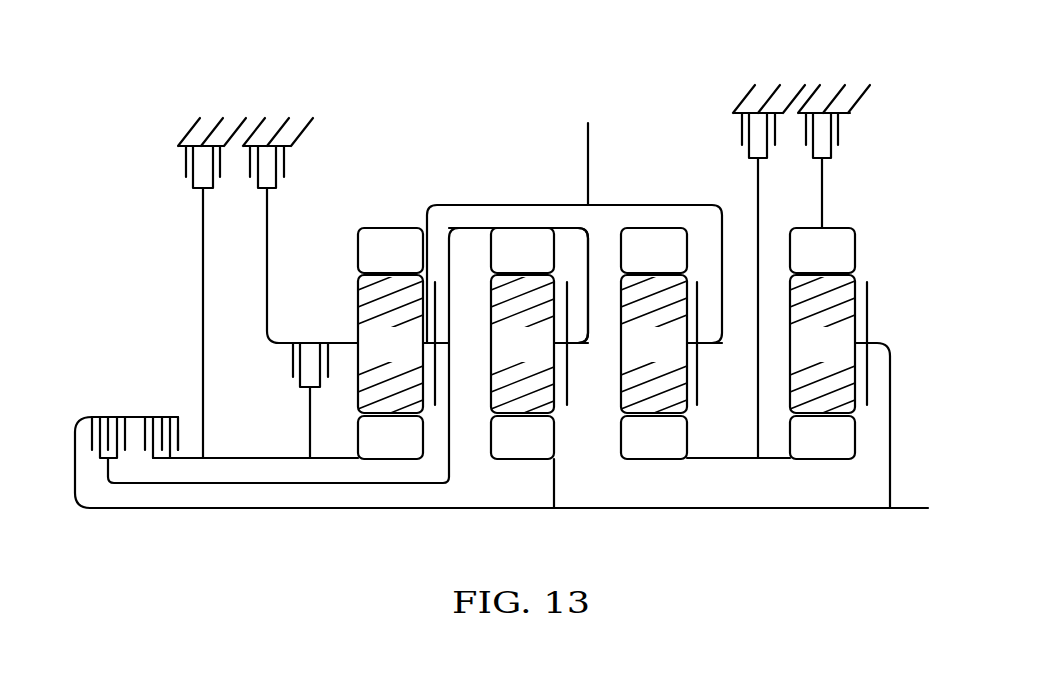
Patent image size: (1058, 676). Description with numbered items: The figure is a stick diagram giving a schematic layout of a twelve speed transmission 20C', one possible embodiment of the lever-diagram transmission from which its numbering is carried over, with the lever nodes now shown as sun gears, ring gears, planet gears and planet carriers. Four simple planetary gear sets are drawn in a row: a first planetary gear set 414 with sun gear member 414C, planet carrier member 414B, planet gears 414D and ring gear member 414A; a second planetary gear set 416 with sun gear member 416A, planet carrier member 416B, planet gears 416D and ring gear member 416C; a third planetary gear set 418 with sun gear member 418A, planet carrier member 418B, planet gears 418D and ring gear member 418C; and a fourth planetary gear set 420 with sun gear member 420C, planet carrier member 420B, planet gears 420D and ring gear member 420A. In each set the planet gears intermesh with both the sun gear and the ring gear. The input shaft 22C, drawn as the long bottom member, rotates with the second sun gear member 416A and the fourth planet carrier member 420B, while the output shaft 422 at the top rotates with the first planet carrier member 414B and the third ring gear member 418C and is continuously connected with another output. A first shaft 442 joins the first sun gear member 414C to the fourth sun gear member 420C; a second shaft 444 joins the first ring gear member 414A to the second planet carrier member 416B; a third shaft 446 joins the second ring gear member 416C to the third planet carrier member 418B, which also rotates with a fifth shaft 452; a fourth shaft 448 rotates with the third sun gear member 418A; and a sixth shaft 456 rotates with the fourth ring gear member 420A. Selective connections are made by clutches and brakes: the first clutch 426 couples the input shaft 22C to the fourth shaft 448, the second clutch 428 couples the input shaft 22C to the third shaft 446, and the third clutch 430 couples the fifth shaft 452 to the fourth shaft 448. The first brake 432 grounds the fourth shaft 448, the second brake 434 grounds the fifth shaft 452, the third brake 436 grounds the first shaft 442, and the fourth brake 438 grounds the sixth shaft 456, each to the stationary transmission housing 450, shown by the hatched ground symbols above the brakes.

The transmission 20C' is at (101, 58).
The input shaft 22C is at (911, 511).
The first planetary gear set 414 is at (682, 395).
The first ring gear member 414A is at (683, 267).
The first planet carrier member 414B is at (700, 386).
The first sun gear member 414C is at (683, 454).
The planet gears 414D is at (683, 356).
The second planetary gear set 416 is at (548, 396).
The second sun gear member 416A is at (551, 454).
The second planet carrier member 416B is at (569, 390).
The second ring gear member 416C is at (551, 267).
The planet gears 416D is at (551, 356).
The third planetary gear set 418 is at (427, 365).
The third sun gear member 418A is at (420, 454).
The third planet carrier member 418B is at (437, 302).
The third ring gear member 418C is at (420, 267).
The planet gears 418D is at (420, 356).
The fourth planetary gear set 420 is at (859, 395).
The fourth ring gear member 420A is at (851, 267).
The fourth planet carrier member 420B is at (868, 322).
The fourth sun gear member 420C is at (851, 454).
The planet gears 420D is at (851, 356).
The output shaft 422 is at (588, 136).
The first clutch 426 is at (180, 431).
The second clutch 428 is at (128, 432).
The third clutch 430 is at (292, 362).
The first brake 432 is at (185, 170).
The second brake 434 is at (285, 168).
The third brake 436 is at (741, 128).
The fourth brake 438 is at (839, 140).
The first shaft or interconnecting member 442 is at (731, 460).
The second shaft or interconnecting member 444 is at (598, 243).
The third shaft or interconnecting member 446 is at (453, 423).
The fourth shaft or interconnecting member 448 is at (250, 460).
The transmission housing 450 is at (192, 125).
The fifth shaft or interconnecting member 452 is at (268, 300).
The sixth shaft or interconnecting member 456 is at (823, 197).